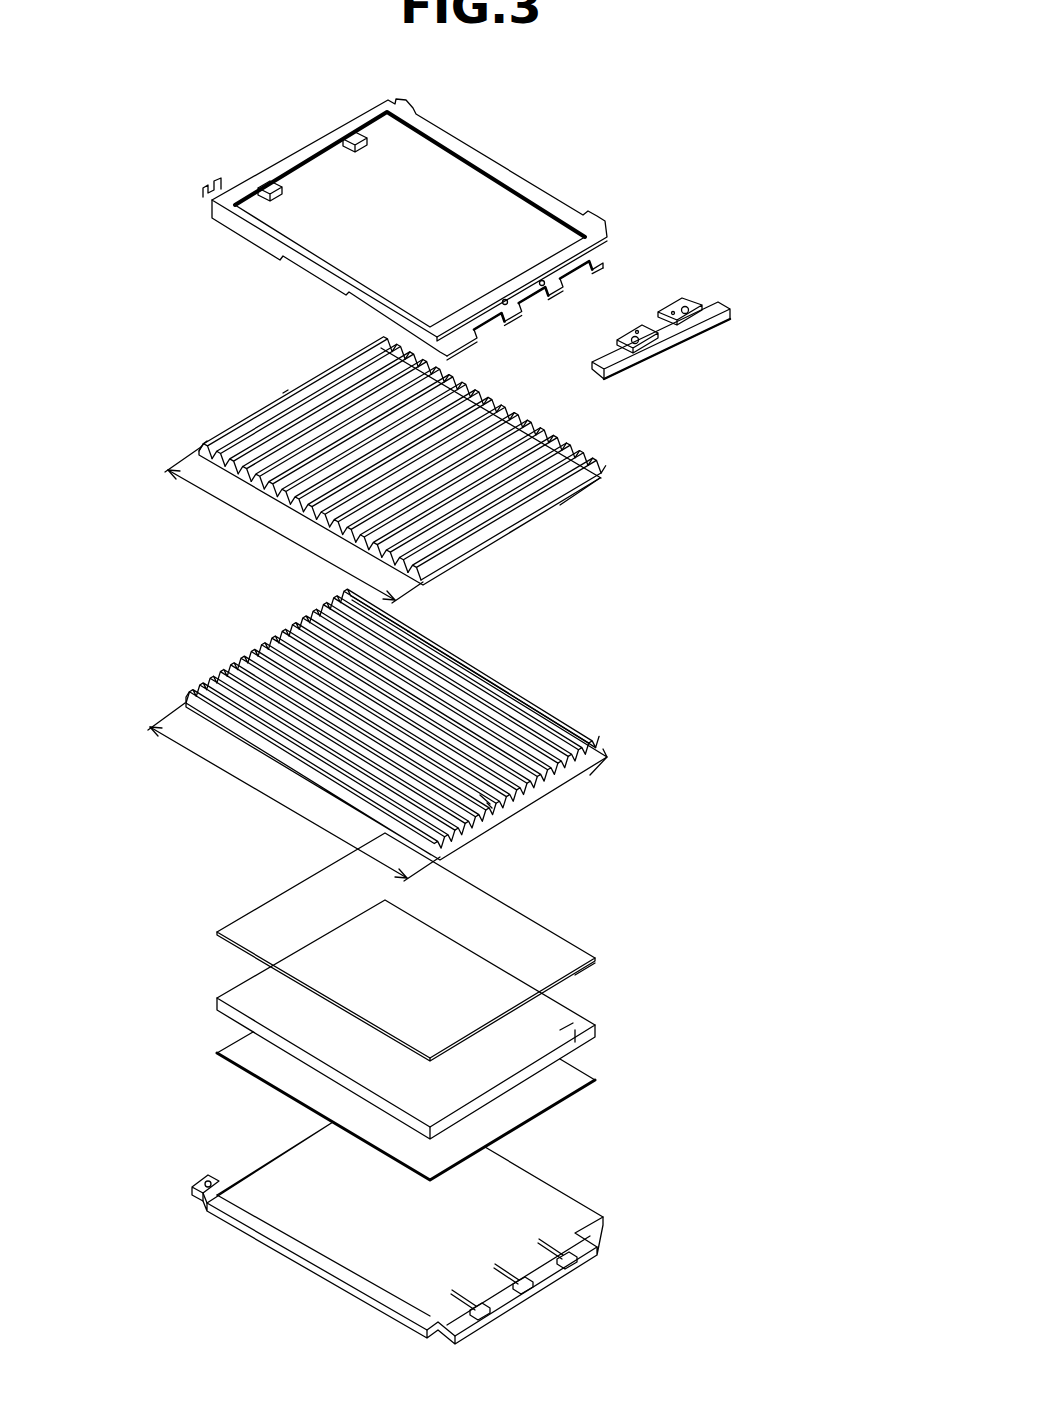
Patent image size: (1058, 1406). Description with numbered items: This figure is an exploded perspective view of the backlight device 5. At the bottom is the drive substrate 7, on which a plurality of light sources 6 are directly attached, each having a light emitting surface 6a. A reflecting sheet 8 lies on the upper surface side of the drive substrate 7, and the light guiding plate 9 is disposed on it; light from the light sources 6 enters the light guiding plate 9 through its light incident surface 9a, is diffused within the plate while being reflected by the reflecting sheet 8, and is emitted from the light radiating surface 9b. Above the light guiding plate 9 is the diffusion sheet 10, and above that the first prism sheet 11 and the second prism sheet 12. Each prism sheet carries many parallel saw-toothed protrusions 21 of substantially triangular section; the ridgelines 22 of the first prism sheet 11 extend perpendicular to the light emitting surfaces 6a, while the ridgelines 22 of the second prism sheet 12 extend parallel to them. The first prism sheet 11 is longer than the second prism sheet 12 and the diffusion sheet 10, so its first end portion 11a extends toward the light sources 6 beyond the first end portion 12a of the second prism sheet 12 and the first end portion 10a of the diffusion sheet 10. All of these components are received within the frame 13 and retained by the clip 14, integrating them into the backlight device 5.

The backlight device 5 is at (826, 585).
The light sources 6 is at (568, 1267).
The light emitting surface 6a is at (568, 1258).
The drive substrate 7 is at (578, 1190).
The reflecting sheet 8 is at (521, 987).
The light guiding plate 9 is at (577, 1005).
The light incident surface 9a is at (575, 1042).
The light radiating surface 9b is at (573, 1023).
The diffusion sheet 10 is at (548, 922).
The first end portion of the diffusion sheet 10a is at (595, 963).
The first prism sheet 11 is at (597, 735).
The first end portion of the first prism sheet 11a is at (590, 775).
The second prism sheet 12 is at (560, 530).
The first end portion of the second prism sheet 12a is at (560, 505).
The frame 13 is at (548, 323).
The clip 14 is at (682, 355).
The saw-toothed protrusions 21 is at (203, 440).
The ridgelines 22 is at (283, 392).